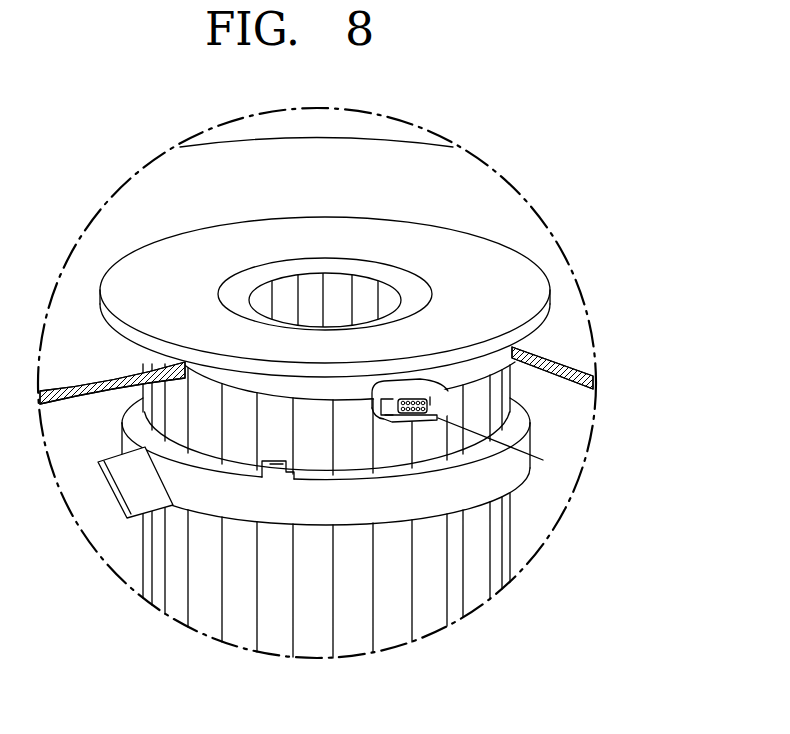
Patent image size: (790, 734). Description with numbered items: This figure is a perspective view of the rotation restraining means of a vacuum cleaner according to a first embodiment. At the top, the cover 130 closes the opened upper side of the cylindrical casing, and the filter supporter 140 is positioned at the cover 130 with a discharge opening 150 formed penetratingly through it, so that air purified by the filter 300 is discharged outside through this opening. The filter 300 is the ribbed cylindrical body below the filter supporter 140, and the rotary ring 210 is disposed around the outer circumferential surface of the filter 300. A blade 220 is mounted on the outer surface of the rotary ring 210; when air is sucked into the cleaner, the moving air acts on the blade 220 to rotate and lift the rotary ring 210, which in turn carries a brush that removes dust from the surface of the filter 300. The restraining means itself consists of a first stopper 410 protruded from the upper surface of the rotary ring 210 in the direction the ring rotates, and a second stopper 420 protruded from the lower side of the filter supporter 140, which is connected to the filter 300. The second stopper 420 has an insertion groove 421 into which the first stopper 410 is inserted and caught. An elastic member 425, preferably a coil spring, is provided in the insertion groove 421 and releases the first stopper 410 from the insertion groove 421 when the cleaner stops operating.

The cover 130 is at (153, 197).
The filter supporter 140 is at (510, 288).
The discharge opening 150 is at (343, 292).
The rotary ring 210 is at (320, 513).
The blade 220 is at (132, 493).
The filter 300 is at (440, 567).
The first stopper 410 is at (262, 461).
The second stopper 420 is at (413, 423).
The insertion groove 421 is at (373, 386).
The elastic member 425 is at (543, 460).